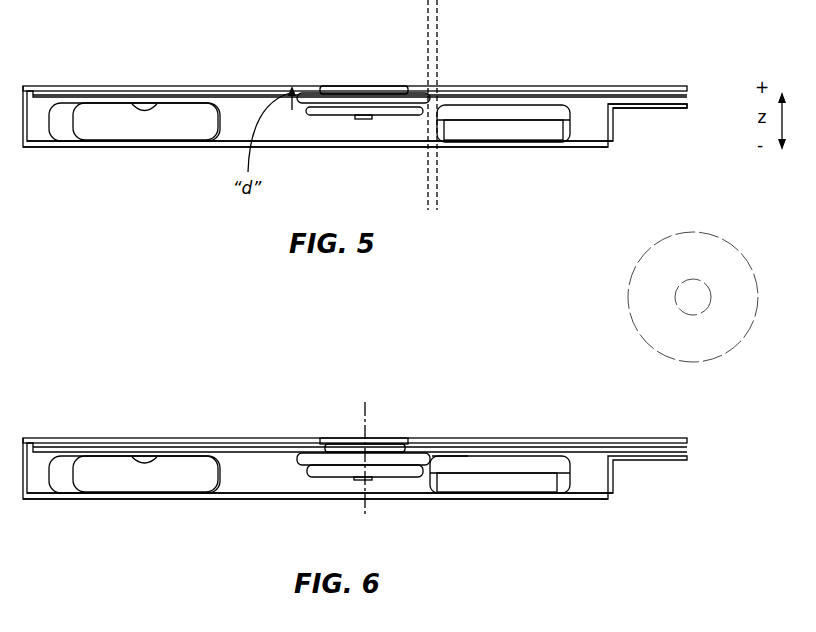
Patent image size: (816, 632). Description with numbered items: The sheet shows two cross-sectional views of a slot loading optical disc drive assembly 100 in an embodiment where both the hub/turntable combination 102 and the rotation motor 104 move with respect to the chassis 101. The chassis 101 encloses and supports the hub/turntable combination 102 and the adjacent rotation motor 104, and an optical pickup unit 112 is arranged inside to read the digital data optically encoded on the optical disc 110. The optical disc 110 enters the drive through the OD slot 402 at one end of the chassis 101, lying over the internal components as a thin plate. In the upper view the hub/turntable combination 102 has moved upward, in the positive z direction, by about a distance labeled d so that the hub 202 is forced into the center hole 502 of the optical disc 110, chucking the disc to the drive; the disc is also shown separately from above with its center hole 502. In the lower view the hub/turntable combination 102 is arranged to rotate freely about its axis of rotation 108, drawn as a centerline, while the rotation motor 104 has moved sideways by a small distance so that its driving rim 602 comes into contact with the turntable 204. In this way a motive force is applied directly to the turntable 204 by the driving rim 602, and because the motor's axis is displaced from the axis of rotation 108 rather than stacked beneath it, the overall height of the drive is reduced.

In FIG. 5, the slot loading optical disc drive assembly 100 is at (617, 123).
In FIG. 6, the slot loading optical disc drive assembly 100 is at (615, 473).
In FIG. 5, the chassis 101 is at (50, 97).
In FIG. 6, the chassis 101 is at (43, 499).
In FIG. 5, the hub/turntable combination 102 is at (394, 130).
In FIG. 5, the rotation motor 104 is at (522, 132).
In FIG. 6, the rotation motor 104 is at (528, 482).
In FIG. 6, the axis of rotation 108 is at (360, 405).
In FIG. 5, the optical disc 110 is at (50, 97).
In FIG. 6, the optical disc 110 is at (47, 438).
In FIG. 5, the optical pickup unit 112 is at (134, 122).
In FIG. 6, the optical pickup unit 112 is at (134, 474).
In FIG. 5, the hub 202 is at (348, 86).
In FIG. 6, the turntable 204 is at (300, 460).
In FIG. 5, the OD slot 402 is at (697, 102).
In FIG. 5, the center hole 502 is at (376, 66).
In FIG. 6, the driving rim 602 is at (467, 468).